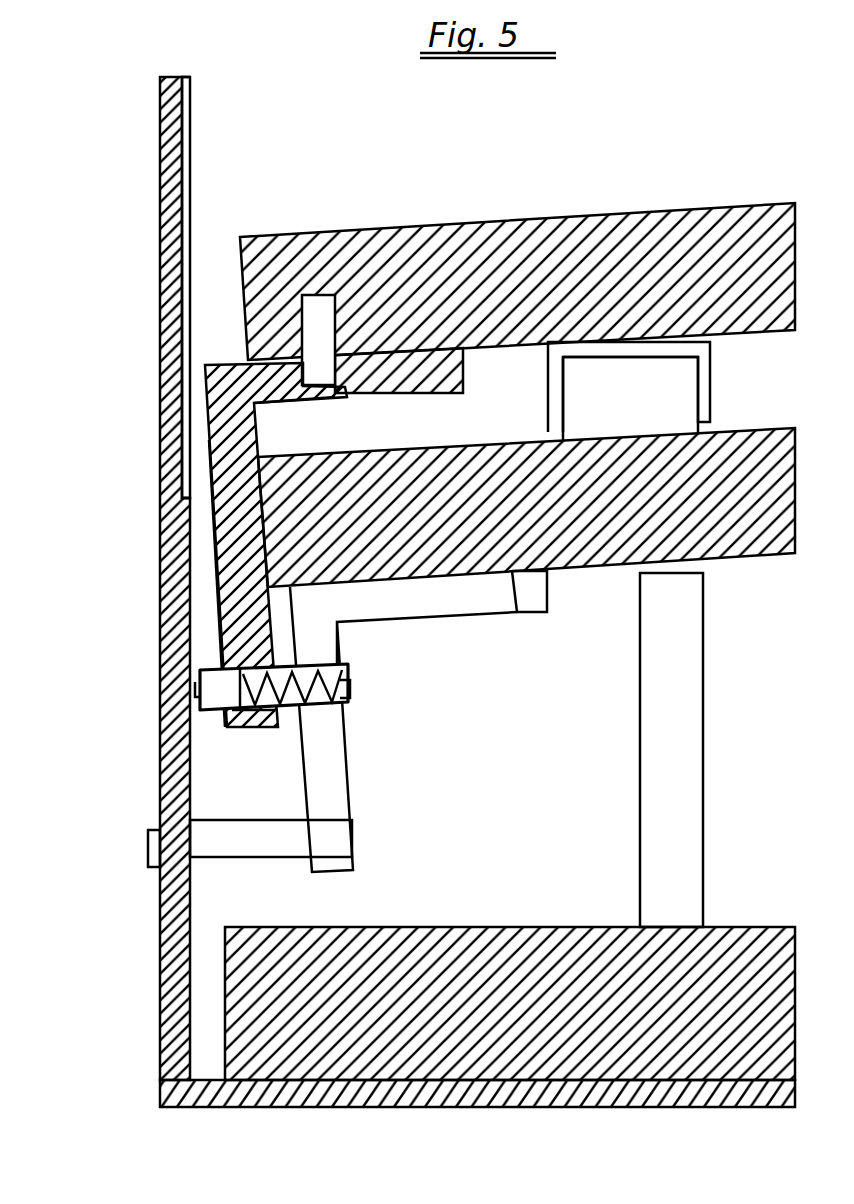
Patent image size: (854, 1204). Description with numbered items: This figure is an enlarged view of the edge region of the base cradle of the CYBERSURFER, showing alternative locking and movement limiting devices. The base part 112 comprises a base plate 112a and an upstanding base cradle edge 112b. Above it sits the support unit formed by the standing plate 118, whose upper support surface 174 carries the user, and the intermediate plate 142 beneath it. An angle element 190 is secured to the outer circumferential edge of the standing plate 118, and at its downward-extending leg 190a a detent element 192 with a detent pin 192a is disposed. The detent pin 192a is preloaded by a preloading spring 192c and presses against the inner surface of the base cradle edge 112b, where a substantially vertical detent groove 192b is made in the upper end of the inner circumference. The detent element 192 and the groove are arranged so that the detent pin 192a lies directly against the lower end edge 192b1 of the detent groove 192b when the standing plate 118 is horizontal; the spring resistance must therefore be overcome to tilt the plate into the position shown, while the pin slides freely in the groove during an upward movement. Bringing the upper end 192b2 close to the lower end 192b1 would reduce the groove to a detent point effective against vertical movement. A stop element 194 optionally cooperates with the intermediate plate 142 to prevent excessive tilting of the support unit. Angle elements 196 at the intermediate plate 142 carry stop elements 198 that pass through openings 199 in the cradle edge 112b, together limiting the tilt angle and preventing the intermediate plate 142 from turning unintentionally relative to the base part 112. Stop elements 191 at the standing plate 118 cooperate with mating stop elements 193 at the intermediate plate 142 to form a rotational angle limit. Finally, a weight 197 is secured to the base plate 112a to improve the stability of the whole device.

The base part 112 is at (463, 846).
The base plate 112a is at (210, 1080).
The base cradle edge 112b is at (170, 928).
The standing plate 118 is at (496, 232).
The intermediate plate 142 is at (518, 612).
The support surface 174 is at (385, 226).
The angle element 190 is at (246, 437).
The leg 190a is at (240, 587).
The stop elements 191 is at (630, 348).
The detent element 192 is at (212, 727).
The detent pin 192a is at (196, 690).
The detent groove 192b is at (188, 178).
The lower end edge of the detent groove 192b1 is at (183, 500).
The upper end of the detent groove 192b2 is at (192, 77).
The preloading spring 192c is at (283, 727).
The mating stop elements 193 is at (663, 378).
The stop element 194 is at (703, 702).
The angle elements 196 is at (352, 775).
The weight 197 is at (510, 948).
The stop elements 198 is at (262, 850).
The openings 199 is at (162, 800).